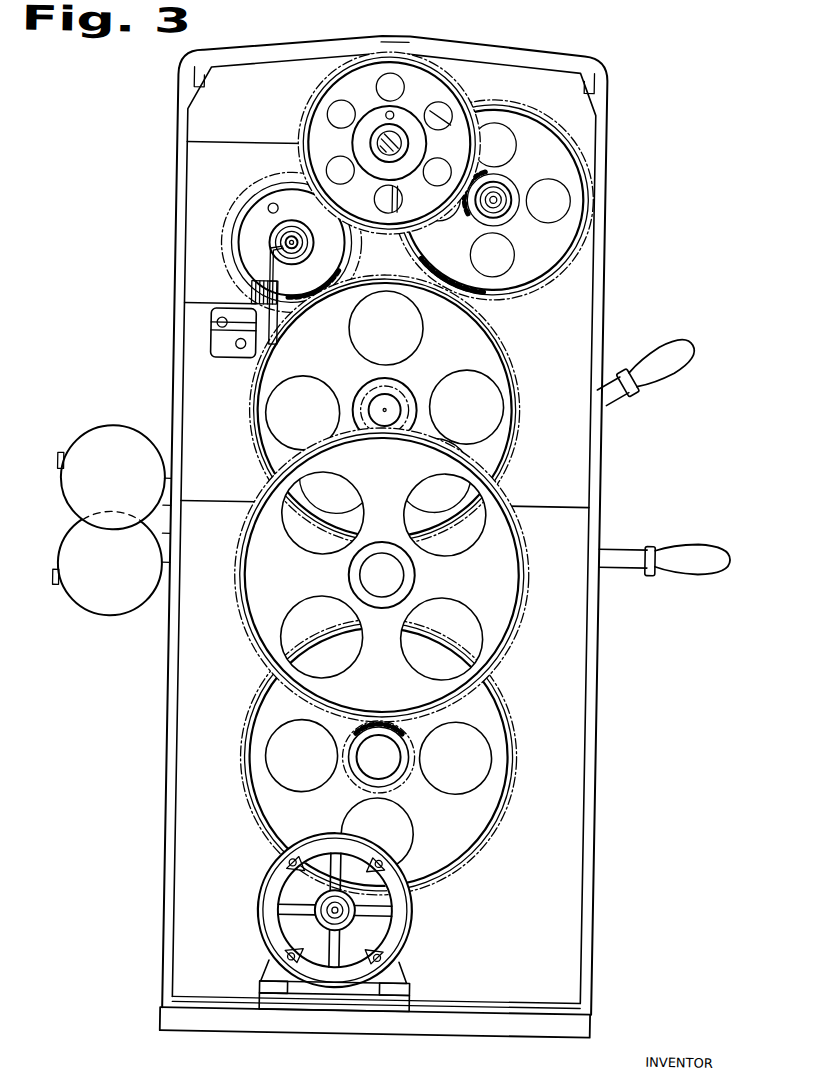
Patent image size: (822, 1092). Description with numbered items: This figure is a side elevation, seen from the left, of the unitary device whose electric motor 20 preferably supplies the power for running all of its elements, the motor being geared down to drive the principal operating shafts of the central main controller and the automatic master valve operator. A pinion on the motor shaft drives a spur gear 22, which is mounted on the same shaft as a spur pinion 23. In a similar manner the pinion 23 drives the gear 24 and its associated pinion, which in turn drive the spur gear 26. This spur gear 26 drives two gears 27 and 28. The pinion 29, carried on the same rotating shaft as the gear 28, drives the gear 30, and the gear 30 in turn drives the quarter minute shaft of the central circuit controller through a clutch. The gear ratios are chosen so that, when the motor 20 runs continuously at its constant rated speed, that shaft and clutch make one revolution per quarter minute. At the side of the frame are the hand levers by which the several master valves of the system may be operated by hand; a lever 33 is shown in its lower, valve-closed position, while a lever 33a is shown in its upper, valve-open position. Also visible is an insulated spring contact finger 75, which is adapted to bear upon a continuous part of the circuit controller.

The electric motor 20 is at (419, 911).
The spur gear 22 is at (481, 845).
The spur pinion 23 is at (354, 781).
The gear 24 is at (252, 645).
The spur gear 26 is at (510, 350).
The gear 27 is at (256, 196).
The gear 28 is at (486, 290).
The pinion 29 is at (470, 165).
The gear 30 is at (452, 89).
The hand lever 33 is at (710, 546).
The hand lever in upper position 33a is at (666, 356).
The insulated spring contact finger 75 is at (262, 272).